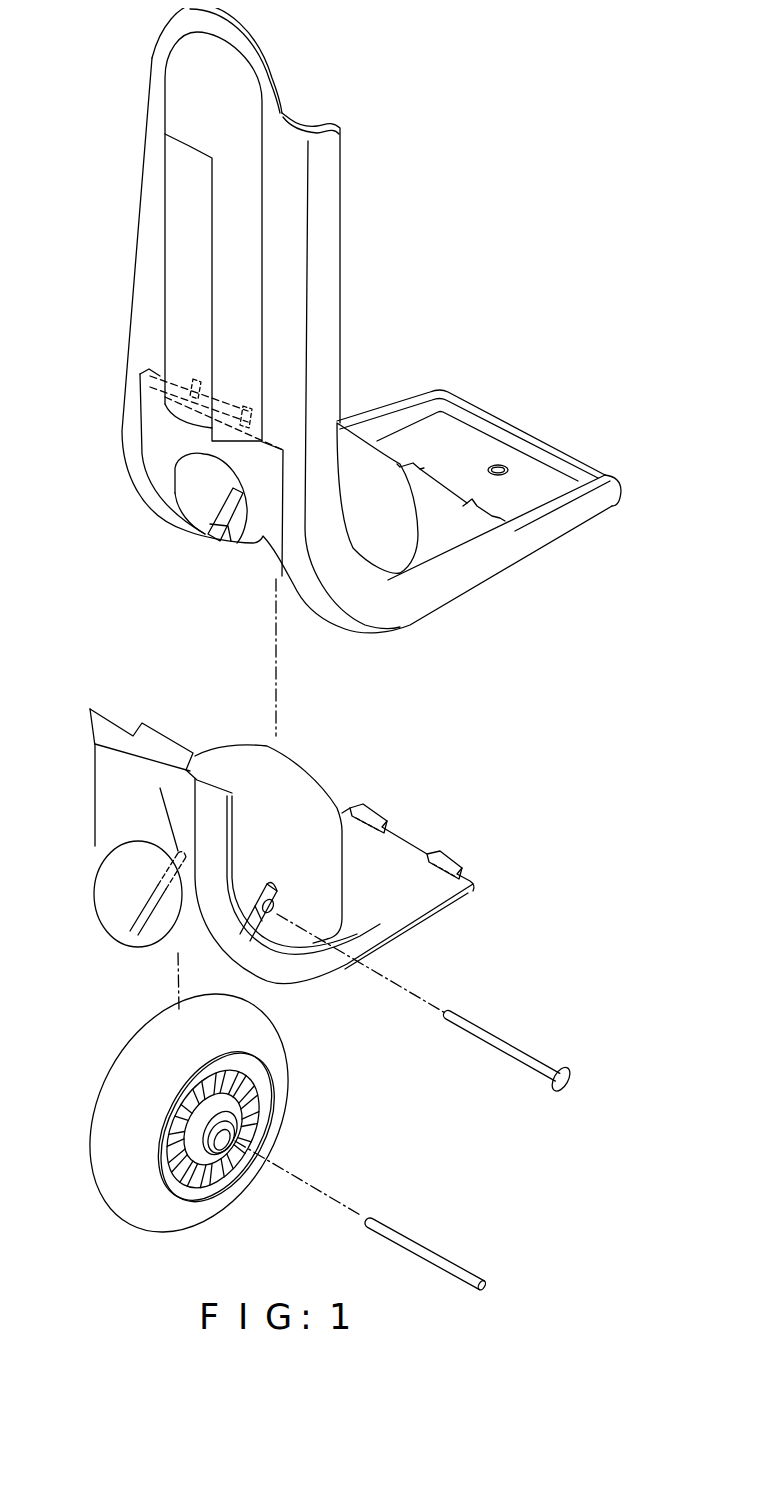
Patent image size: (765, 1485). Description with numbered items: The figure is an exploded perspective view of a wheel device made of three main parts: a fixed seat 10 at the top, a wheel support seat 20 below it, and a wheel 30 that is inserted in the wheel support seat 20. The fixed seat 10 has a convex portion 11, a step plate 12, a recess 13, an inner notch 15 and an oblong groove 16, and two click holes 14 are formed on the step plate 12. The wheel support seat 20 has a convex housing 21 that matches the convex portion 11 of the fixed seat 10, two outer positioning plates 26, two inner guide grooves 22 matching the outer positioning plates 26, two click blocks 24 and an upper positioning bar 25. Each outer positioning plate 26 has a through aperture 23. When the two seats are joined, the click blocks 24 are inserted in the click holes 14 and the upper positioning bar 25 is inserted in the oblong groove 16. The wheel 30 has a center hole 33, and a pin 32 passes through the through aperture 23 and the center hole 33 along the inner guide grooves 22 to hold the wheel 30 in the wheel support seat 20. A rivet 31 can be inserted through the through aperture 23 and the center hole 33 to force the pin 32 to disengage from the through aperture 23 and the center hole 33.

The fixed seat 10 is at (143, 241).
The convex portion 11 is at (347, 437).
The step plate 12 is at (433, 495).
The recess 13 is at (487, 440).
The click holes 14 is at (408, 463).
The inner notch 15 is at (227, 513).
The oblong groove 16 is at (210, 406).
The wheel support seat 20 is at (107, 807).
The convex housing 21 is at (288, 763).
The inner guide grooves 22 is at (137, 932).
The through aperture 23 is at (278, 905).
The click blocks 24 is at (365, 807).
The upper positioning bar 25 is at (160, 740).
The outer positioning plates 26 is at (290, 930).
The wheel 30 is at (133, 1213).
The rivet 31 is at (427, 1247).
The pin 32 is at (513, 1053).
The center hole 33 is at (227, 1137).